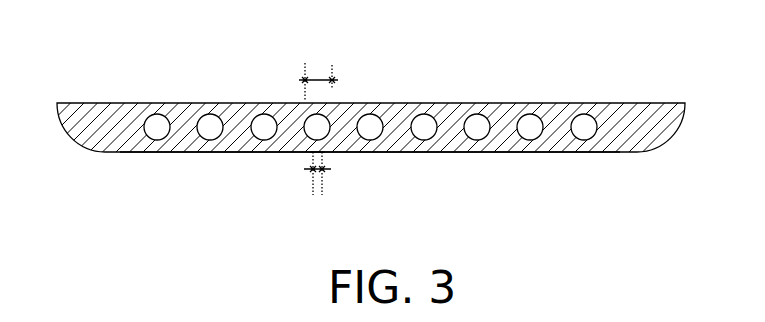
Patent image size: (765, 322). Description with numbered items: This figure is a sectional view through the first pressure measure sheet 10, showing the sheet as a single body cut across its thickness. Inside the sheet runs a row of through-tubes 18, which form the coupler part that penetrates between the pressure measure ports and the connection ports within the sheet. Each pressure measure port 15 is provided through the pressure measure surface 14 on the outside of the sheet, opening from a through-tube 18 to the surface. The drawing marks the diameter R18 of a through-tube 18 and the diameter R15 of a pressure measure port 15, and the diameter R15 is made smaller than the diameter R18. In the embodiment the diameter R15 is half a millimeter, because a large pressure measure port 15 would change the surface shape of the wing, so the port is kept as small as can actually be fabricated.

The first pressure measure sheet 10 is at (613, 153).
The pressure measure surface 14 is at (413, 153).
The pressure measure port 15 is at (312, 170).
The through-tube 18 is at (157, 114).
The diameter of the through-tube R18 is at (305, 75).
The diameter of the pressure measure port R15 is at (336, 175).